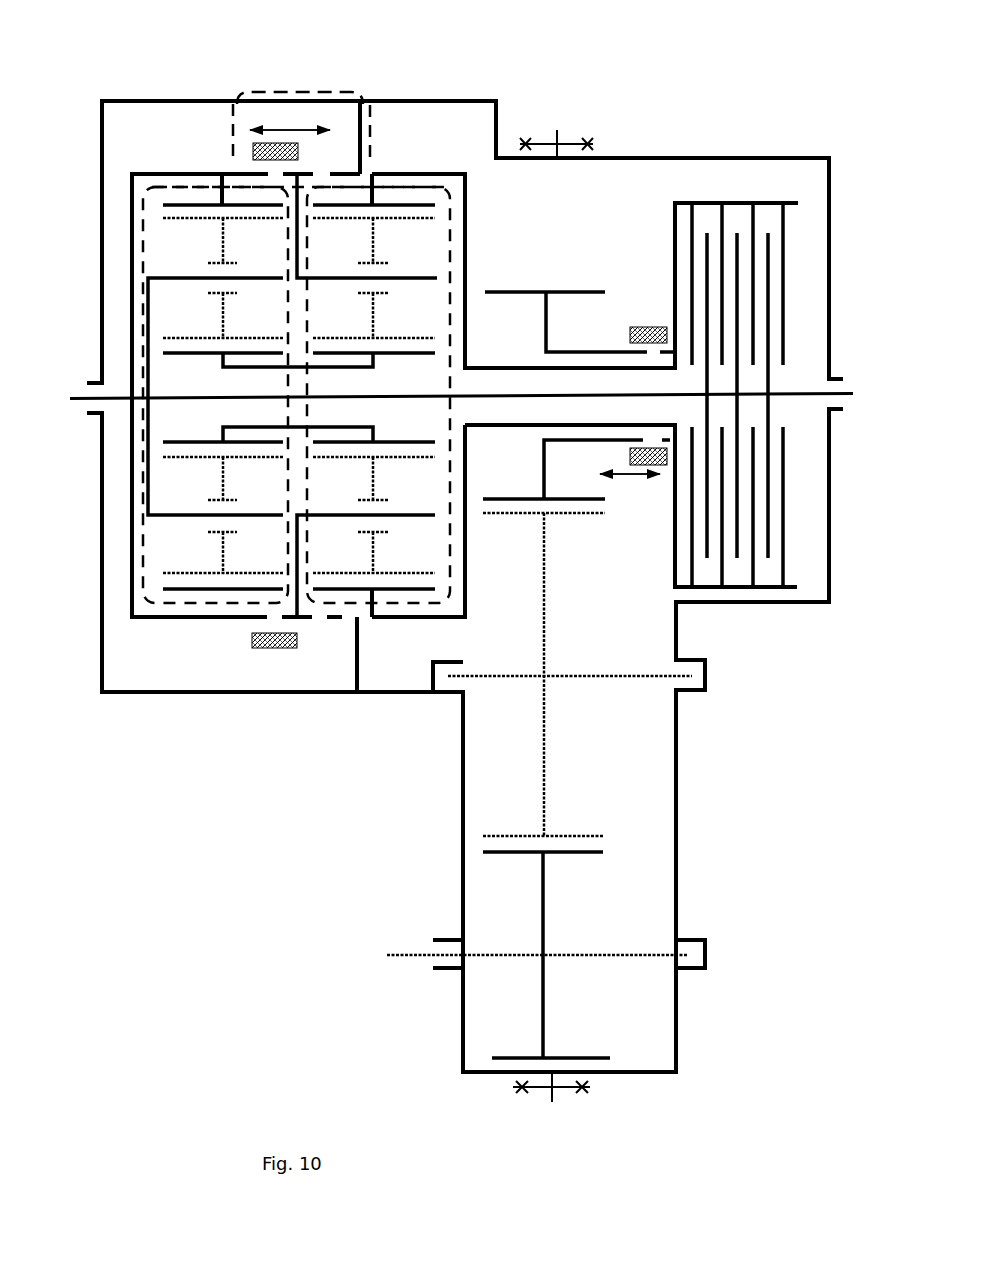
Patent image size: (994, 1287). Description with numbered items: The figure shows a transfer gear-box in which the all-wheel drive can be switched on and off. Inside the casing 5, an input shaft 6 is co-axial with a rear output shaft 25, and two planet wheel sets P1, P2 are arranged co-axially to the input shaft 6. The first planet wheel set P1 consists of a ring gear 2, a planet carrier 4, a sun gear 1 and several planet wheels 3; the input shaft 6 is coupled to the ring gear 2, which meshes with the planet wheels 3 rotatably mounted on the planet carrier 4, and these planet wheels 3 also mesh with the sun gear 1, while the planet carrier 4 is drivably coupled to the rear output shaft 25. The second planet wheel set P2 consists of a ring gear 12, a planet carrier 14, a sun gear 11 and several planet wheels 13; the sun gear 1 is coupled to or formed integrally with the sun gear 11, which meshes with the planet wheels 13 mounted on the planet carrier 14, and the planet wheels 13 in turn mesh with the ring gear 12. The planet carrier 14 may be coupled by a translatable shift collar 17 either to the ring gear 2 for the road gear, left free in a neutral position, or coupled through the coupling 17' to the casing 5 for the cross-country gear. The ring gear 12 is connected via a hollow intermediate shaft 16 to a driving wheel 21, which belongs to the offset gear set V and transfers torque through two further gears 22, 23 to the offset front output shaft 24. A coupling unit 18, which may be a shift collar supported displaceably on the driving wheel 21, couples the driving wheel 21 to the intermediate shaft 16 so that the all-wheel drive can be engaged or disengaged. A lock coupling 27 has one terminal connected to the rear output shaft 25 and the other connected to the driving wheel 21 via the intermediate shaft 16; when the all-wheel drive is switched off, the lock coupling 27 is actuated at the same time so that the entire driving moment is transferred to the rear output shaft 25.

The sun gear 1 is at (268, 397).
The ring gear 2 is at (210, 191).
The planet wheels 3 is at (233, 486).
The planet carrier 4 is at (215, 388).
The casing 5 is at (465, 574).
The input shaft 6 is at (42, 398).
The sun gear 11 is at (374, 397).
The ring gear 12 is at (413, 189).
The planet wheels 13 is at (386, 486).
The planet carrier 14 is at (367, 395).
The intermediate shaft 16 is at (465, 359).
The shift collar 17 is at (296, 351).
The coupling to the casing 17' is at (396, 121).
The coupling unit 18 is at (642, 300).
The driving wheel 21 is at (580, 306).
The gear 22 is at (570, 638).
The gear 23 is at (546, 947).
The front output shaft 24 is at (346, 955).
The rear output shaft 25 is at (878, 394).
The lock coupling 27 is at (757, 395).
The first planet wheel set P1 is at (174, 615).
The second planet wheel set P2 is at (345, 616).
The offset gear set V is at (734, 780).